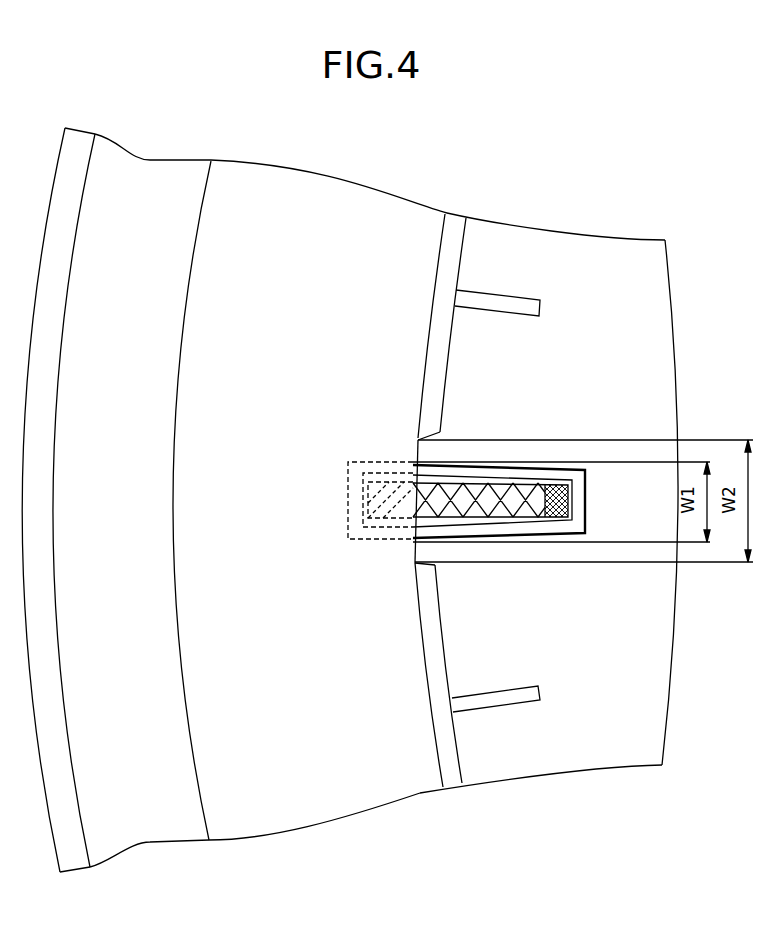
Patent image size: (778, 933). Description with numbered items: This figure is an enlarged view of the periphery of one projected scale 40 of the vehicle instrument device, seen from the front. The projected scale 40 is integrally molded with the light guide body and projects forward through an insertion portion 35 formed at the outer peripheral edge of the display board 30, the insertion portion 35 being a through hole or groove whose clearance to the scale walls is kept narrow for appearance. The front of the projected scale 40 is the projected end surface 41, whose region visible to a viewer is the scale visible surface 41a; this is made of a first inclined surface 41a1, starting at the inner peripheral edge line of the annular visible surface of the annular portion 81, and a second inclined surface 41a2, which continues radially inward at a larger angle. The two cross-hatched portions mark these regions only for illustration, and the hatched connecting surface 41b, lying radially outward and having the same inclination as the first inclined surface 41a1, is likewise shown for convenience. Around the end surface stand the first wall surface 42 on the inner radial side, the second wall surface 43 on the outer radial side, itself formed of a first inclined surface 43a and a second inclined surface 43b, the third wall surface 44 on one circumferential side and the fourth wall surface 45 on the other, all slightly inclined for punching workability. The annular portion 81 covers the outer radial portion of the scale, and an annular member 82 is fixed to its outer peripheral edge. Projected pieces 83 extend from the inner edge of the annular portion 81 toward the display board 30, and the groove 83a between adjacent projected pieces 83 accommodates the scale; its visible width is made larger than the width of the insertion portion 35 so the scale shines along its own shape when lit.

The display board 30 is at (620, 750).
The insertion portion 35 is at (528, 470).
The projected scale 40 is at (466, 459).
The projected end surface 41 is at (407, 462).
The scale visible surface 41a is at (585, 608).
The first inclined surface 41a1 is at (493, 519).
The second inclined surface 41a2 is at (562, 516).
The connecting surface 41b is at (392, 527).
The first wall surface 42 is at (574, 493).
The second wall surface 43 is at (265, 465).
The first inclined surface 43a is at (363, 493).
The second inclined surface 43b is at (365, 500).
The third wall surface 44 is at (375, 473).
The fourth wall surface 45 is at (368, 540).
The annular portion 81 is at (363, 800).
The annular member 82 is at (150, 840).
The projected piece 83 is at (464, 238).
The groove 83a is at (425, 450).